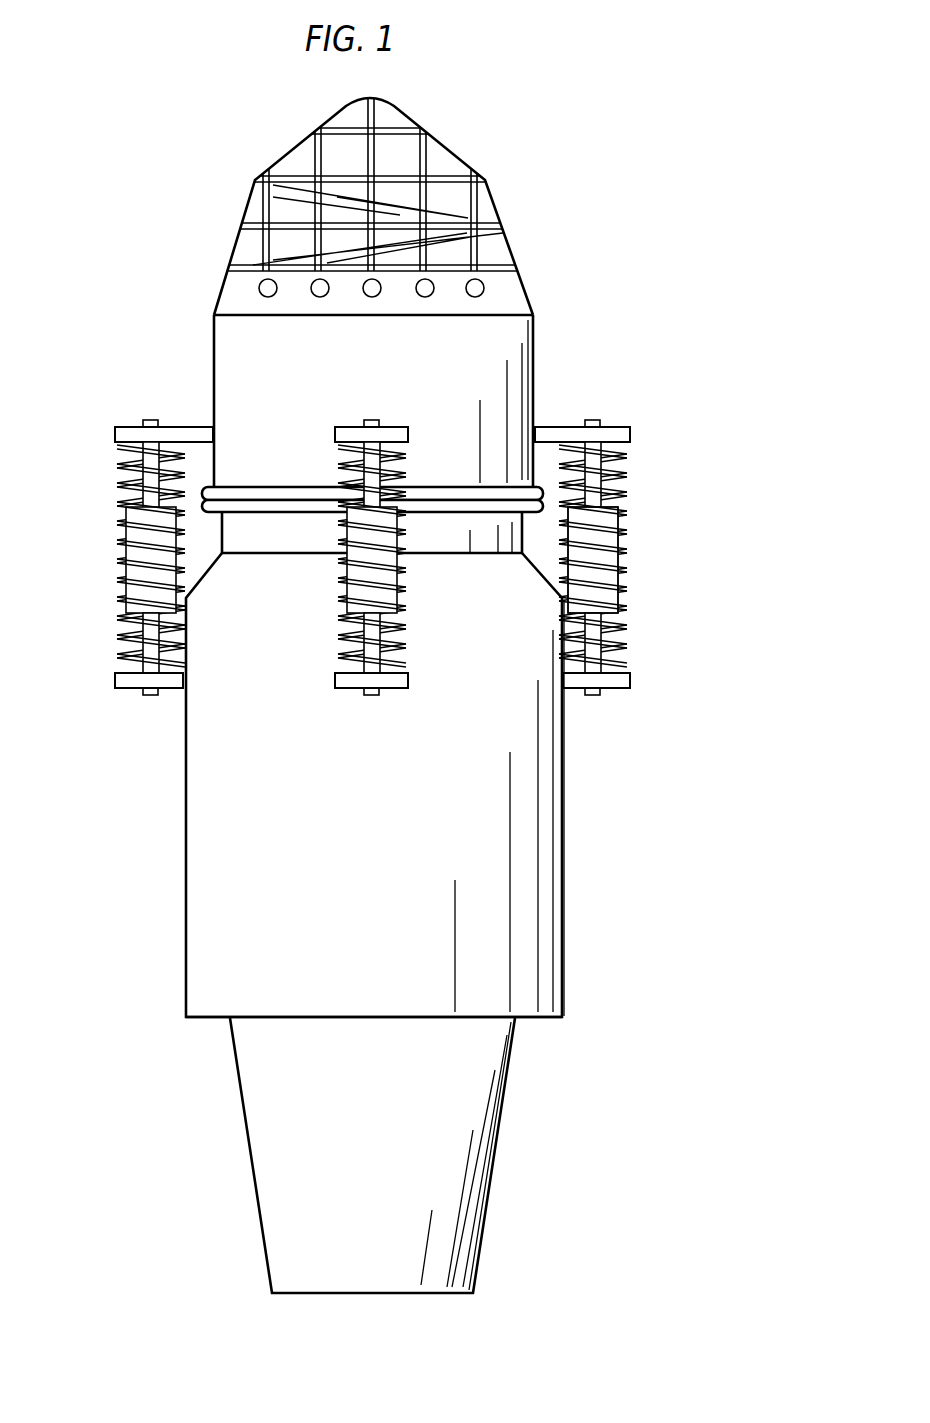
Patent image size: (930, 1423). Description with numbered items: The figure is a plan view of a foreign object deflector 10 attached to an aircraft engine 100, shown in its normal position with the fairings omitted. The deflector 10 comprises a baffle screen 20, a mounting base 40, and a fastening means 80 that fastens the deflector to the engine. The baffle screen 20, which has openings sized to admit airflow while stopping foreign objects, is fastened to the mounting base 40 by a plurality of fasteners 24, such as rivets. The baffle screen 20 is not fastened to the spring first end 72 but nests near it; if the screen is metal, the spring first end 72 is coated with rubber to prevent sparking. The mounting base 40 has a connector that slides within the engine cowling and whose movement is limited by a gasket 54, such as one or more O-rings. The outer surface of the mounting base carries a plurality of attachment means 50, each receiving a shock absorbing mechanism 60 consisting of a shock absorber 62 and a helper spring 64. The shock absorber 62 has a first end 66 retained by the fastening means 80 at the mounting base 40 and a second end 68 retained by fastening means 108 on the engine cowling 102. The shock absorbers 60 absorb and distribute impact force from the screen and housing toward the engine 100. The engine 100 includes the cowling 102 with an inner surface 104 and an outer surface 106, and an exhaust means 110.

The foreign object deflector 10 is at (172, 330).
The baffle screen 20 is at (455, 153).
The fasteners 24 is at (485, 290).
The mounting base 40 is at (537, 338).
The attachment means 50 is at (187, 425).
The gasket 54 is at (480, 486).
The shock absorber 60 is at (613, 493).
The shock absorber 62 is at (613, 547).
The helper spring 64 is at (622, 630).
The first end 66 is at (597, 417).
The second end 68 is at (600, 695).
The spring first end 72 is at (443, 237).
The fastening means 80 is at (115, 437).
The engine 100 is at (572, 896).
The cowling 102 is at (493, 653).
The inner surface 104 is at (190, 1020).
The outer surface 106 is at (543, 953).
The fastening means 108 is at (115, 682).
The exhaust means 110 is at (500, 1118).